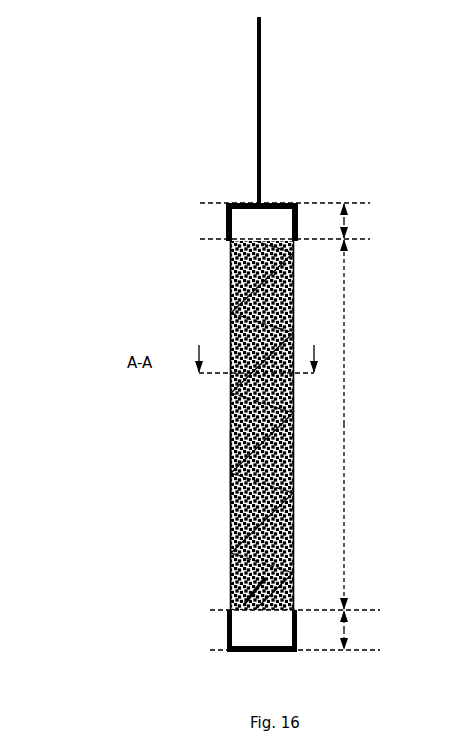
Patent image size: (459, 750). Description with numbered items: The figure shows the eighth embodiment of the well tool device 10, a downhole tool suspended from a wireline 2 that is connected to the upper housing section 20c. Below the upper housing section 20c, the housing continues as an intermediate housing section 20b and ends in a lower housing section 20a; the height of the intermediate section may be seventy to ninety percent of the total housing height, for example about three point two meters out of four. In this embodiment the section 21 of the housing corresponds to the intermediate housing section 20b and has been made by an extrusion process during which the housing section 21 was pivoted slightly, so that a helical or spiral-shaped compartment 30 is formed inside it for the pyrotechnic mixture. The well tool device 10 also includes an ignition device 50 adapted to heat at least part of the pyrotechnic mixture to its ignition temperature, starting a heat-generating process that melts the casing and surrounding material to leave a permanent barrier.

The wireline 2 is at (262, 81).
The well tool device 10 is at (164, 176).
The lower housing section 20a is at (228, 630).
The intermediate housing section 20b is at (229, 468).
The upper housing section 20c is at (228, 222).
The section of the housing 21 is at (229, 430).
The helical or spiral-shaped compartment 30 is at (280, 469).
The ignition device 50 is at (252, 594).